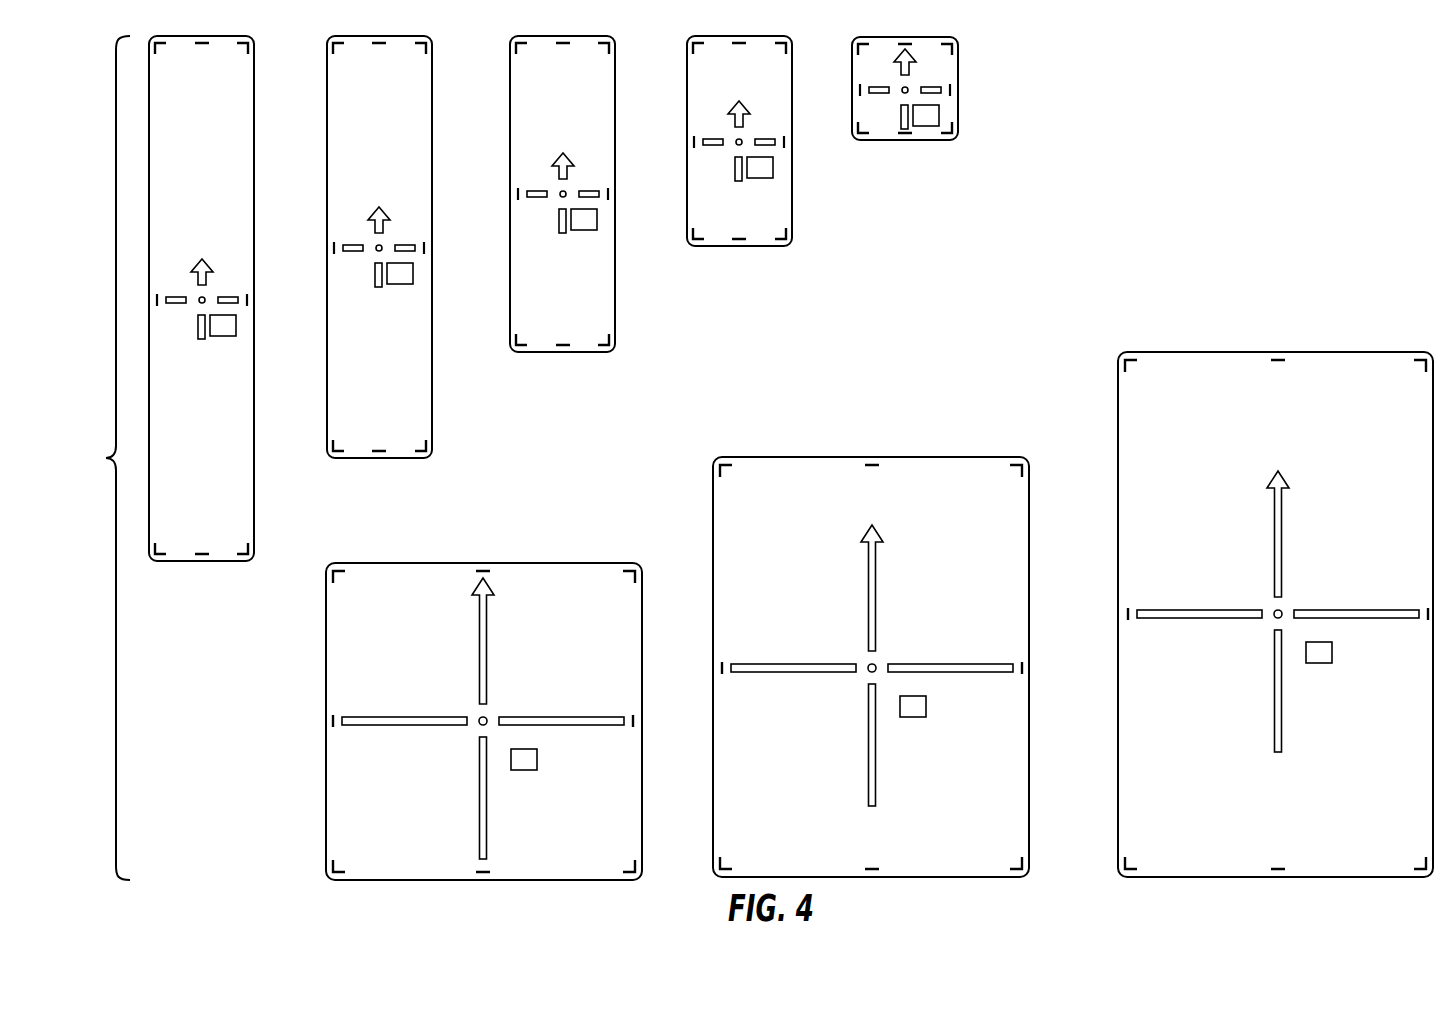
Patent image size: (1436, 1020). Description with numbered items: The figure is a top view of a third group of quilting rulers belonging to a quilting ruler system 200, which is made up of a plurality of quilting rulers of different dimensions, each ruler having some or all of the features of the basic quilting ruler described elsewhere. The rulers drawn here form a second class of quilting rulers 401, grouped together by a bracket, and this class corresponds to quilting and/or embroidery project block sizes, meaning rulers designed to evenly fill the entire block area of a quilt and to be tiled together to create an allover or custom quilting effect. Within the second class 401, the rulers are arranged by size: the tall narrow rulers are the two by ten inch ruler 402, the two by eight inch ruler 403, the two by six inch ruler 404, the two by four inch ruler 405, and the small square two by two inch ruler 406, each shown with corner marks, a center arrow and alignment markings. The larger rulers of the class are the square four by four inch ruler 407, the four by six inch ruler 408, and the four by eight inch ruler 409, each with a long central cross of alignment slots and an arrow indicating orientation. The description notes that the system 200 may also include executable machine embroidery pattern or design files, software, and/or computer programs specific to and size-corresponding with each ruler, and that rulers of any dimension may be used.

The quilting ruler system 200 is at (1369, 70).
The second class of quilting rulers 401 is at (98, 458).
The 2×2 quilting ruler 402 is at (222, 556).
The 2×4 quilting ruler 403 is at (398, 450).
The 2×6 quilting ruler 404 is at (583, 345).
The 2×8 quilting ruler 405 is at (757, 239).
The 2×10 quilting ruler 406 is at (925, 135).
The 4×4 quilting ruler 407 is at (560, 572).
The 4×6 quilting ruler 408 is at (944, 466).
The 4×8 quilting ruler 409 is at (1350, 360).